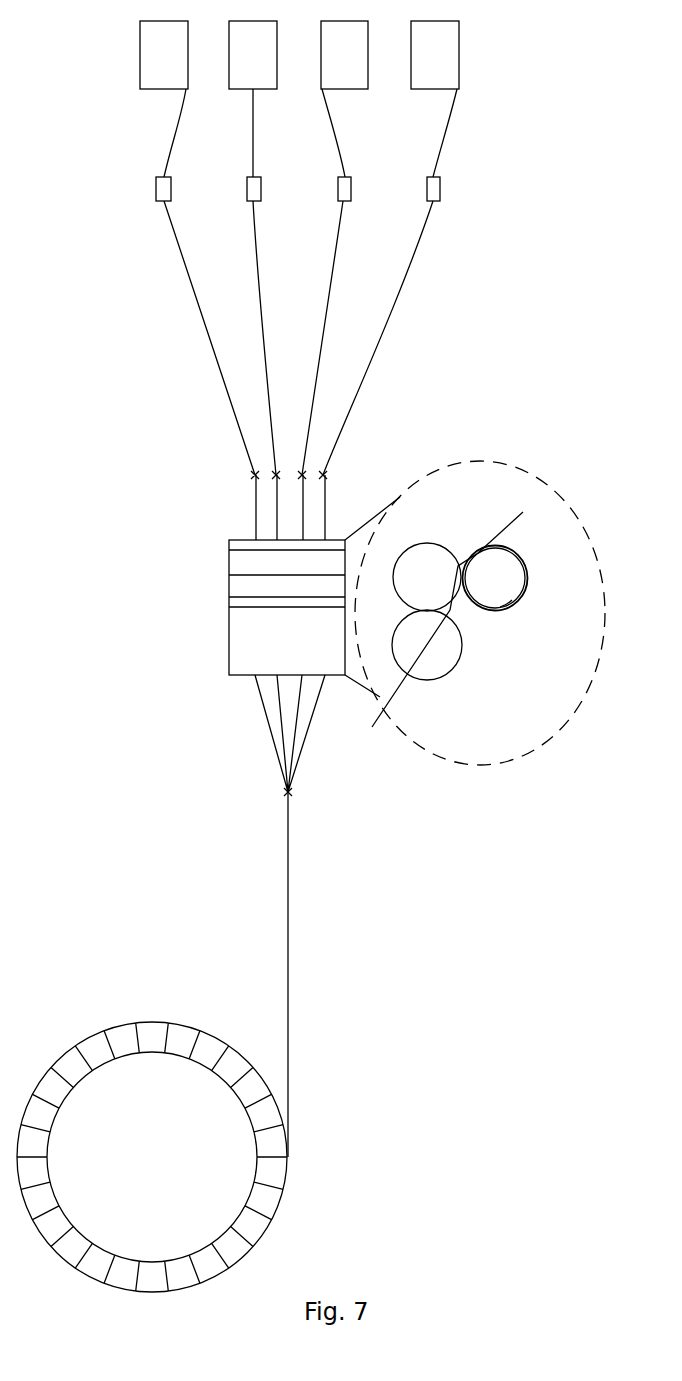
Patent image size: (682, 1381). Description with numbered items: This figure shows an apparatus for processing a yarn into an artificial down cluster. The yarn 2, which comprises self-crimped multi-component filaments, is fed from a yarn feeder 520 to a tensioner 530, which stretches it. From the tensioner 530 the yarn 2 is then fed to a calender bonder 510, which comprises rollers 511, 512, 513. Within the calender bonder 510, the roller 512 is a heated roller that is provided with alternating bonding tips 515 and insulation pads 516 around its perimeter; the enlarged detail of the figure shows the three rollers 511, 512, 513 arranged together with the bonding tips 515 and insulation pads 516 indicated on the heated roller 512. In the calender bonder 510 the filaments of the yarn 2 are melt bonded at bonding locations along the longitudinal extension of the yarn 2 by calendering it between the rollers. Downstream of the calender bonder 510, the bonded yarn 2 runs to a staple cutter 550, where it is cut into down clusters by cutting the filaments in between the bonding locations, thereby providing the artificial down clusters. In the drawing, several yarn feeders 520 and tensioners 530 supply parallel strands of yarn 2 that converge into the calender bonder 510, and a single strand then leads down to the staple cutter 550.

The yarn 2 is at (387, 318).
The calender bonder 510 is at (287, 607).
The roller 511 is at (427, 577).
The heated roller 512 is at (495, 578).
The roller 513 is at (427, 645).
The bonding tips 515 is at (524, 560).
The insulation pads 516 is at (521, 597).
The yarn feeder 520 is at (275, 55).
The tensioner 530 is at (274, 189).
The staple cutter 550 is at (152, 1157).